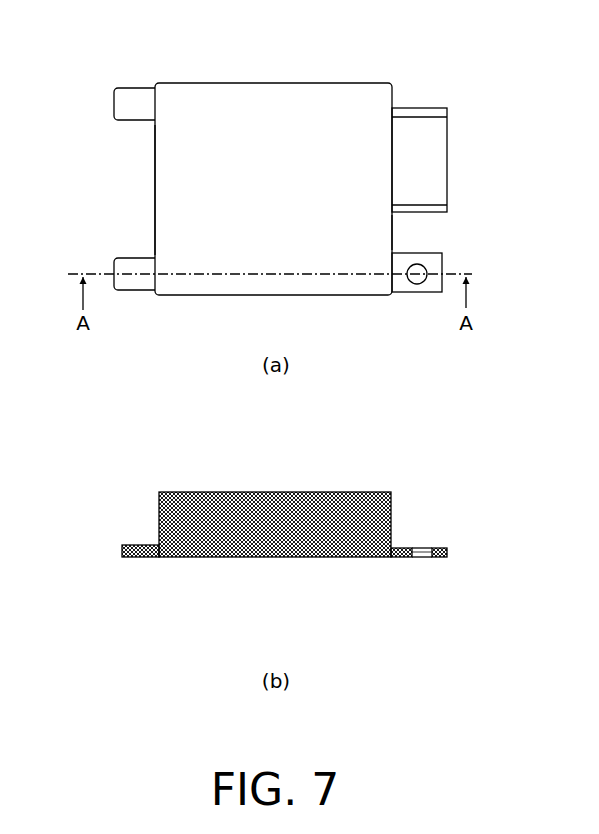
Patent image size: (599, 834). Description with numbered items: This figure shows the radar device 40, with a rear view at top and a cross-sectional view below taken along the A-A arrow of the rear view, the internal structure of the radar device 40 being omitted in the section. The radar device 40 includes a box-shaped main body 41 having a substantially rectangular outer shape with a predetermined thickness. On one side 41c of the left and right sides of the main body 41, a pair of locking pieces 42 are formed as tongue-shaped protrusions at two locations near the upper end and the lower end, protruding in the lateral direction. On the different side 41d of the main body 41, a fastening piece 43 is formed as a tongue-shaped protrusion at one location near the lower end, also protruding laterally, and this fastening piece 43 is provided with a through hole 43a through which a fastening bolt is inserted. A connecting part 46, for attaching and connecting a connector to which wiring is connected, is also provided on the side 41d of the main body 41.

The radar device 40 is at (396, 83).
The main body 41 is at (270, 105).
The one side 41c is at (155, 218).
The different side 41d is at (392, 240).
The locking piece 42 is at (135, 95).
The fastening piece 43 is at (430, 287).
The through hole 43a is at (426, 266).
The connecting part 46 is at (437, 140).